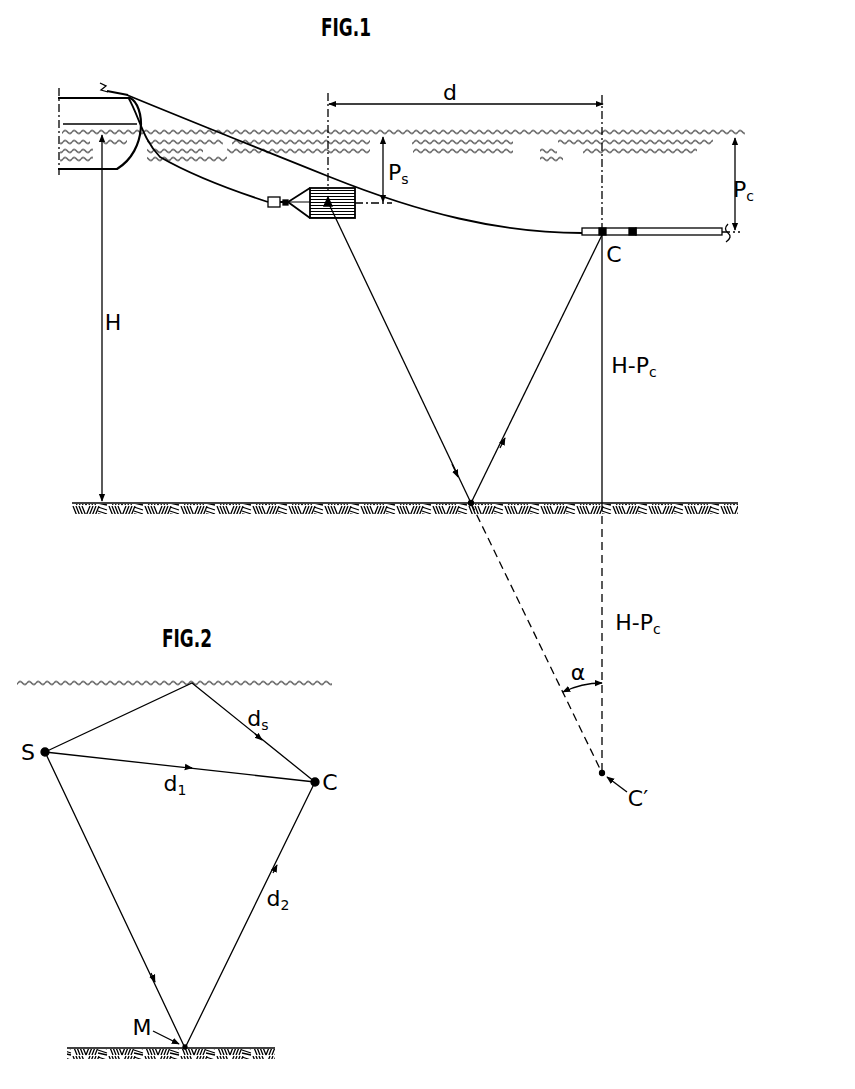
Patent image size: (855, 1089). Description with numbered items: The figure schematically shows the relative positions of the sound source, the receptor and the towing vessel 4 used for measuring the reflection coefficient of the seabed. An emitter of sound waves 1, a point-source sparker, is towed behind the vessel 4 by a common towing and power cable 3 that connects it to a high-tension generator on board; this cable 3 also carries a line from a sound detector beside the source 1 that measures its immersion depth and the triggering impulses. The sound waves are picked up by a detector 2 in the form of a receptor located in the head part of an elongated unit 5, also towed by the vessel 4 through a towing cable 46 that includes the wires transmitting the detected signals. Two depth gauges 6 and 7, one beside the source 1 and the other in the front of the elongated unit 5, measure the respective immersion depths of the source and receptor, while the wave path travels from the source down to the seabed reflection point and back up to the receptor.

The emitter of sound waves 1 is at (353, 216).
The detector 2 is at (661, 222).
The towing and power cable 3 is at (202, 174).
The vessel 4 is at (126, 160).
The elongated unit 5 is at (674, 236).
The depth gauge 6 is at (284, 208).
The depth gauge 7 is at (633, 238).
The towing cable 46 is at (457, 218).